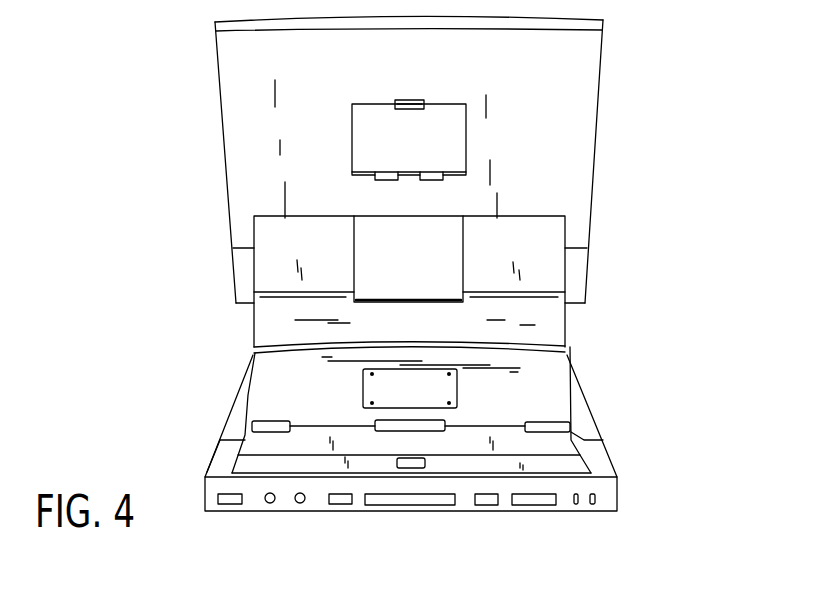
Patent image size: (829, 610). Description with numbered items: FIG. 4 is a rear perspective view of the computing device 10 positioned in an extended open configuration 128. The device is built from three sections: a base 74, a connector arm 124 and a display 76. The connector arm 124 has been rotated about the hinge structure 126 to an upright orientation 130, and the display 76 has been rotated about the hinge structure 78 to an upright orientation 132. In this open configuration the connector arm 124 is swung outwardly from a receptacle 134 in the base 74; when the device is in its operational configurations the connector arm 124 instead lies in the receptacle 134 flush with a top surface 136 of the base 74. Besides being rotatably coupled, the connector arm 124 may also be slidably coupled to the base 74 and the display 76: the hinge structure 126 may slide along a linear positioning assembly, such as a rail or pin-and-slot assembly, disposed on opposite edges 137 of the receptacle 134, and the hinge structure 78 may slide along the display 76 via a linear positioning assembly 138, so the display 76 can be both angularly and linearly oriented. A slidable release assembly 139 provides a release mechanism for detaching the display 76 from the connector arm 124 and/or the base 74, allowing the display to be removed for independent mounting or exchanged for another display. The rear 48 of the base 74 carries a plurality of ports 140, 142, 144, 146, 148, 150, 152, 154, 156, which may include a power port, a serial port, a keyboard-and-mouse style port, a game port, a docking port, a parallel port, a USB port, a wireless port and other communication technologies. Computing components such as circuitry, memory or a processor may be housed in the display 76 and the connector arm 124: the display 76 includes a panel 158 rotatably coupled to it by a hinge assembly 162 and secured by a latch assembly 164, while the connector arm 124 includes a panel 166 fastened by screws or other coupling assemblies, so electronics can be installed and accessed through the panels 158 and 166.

The computing device 10 is at (431, 294).
The open configuration 128 is at (612, 299).
The display 76 is at (456, 159).
The upright orientation 132 is at (601, 90).
The hinge structure 78 is at (240, 293).
The linear positioning assembly 138 is at (565, 232).
The connector arm 124 is at (458, 397).
The upright orientation 130 is at (570, 345).
The hinge structure 126 is at (580, 425).
The base 74 is at (429, 464).
The rear 48 is at (612, 455).
The opposite edges 137 is at (616, 474).
The receptacle 134 is at (268, 462).
The top surface 136 is at (222, 457).
The slidable release assembly 139 is at (400, 458).
The port 140 is at (232, 505).
The port 142 is at (270, 503).
The port 144 is at (300, 503).
The port 146 is at (340, 505).
The port 148 is at (407, 505).
The port 150 is at (483, 505).
The port 152 is at (528, 505).
The port 154 is at (576, 505).
The port 156 is at (592, 505).
The panel 158 is at (467, 127).
The hinge assembly 162 is at (467, 173).
The latch assembly 164 is at (411, 98).
The panel 166 is at (457, 389).